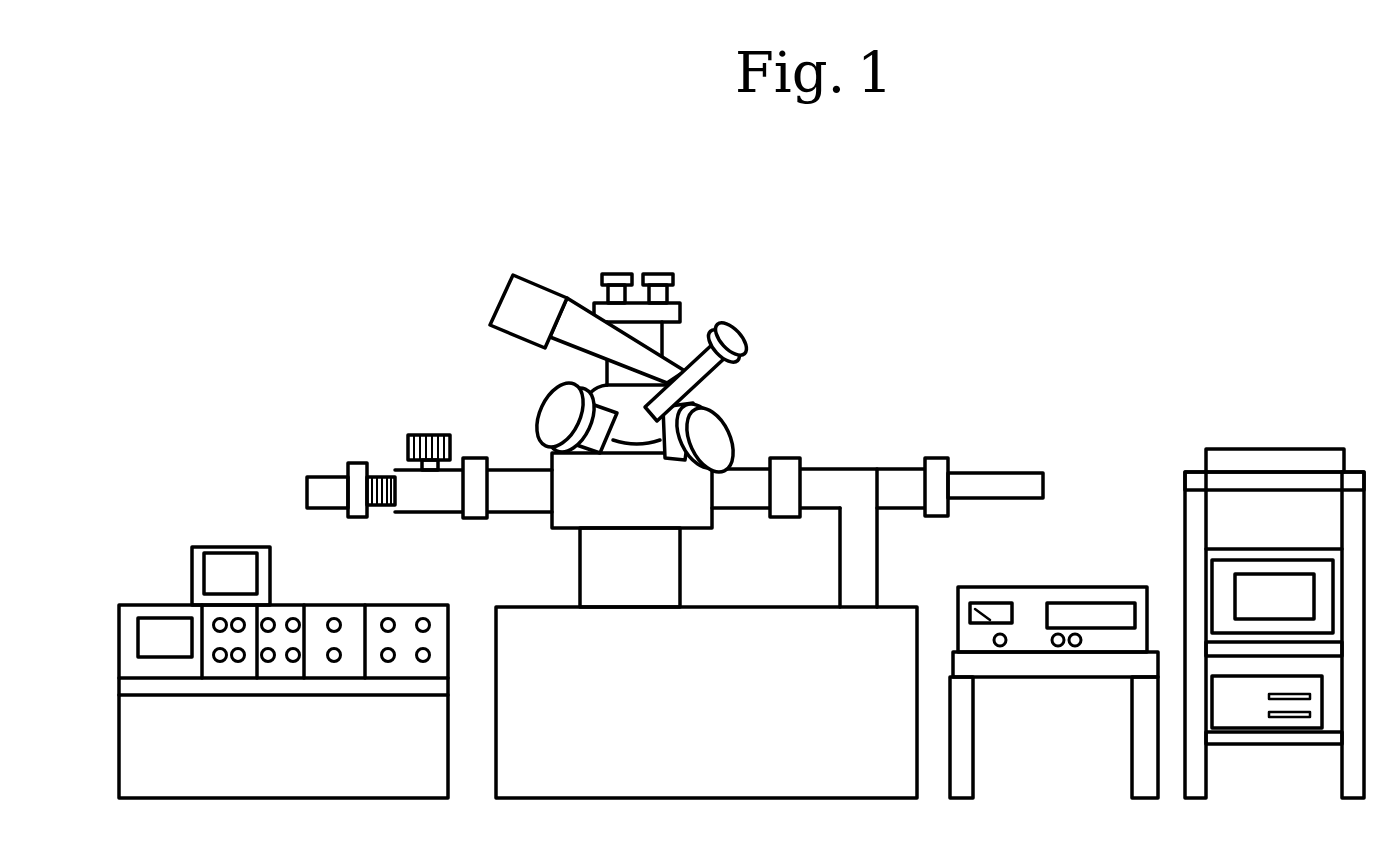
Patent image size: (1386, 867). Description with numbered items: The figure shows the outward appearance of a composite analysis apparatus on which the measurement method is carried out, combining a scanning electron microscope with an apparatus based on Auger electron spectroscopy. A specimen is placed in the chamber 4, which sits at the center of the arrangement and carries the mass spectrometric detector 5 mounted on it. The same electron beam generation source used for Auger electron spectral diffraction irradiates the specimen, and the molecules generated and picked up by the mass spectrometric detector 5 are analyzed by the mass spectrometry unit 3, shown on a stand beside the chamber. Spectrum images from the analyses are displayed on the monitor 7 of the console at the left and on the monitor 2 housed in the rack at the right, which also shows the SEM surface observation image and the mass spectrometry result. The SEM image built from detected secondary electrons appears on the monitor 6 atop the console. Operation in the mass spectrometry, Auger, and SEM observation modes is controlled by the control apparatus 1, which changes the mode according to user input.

The control apparatus 1 is at (1267, 450).
The monitor 2 is at (1249, 597).
The mass spectrometry unit 3 is at (973, 587).
The chamber 4 is at (552, 465).
The mass spectrometric detector 5 is at (733, 338).
The monitor 6 is at (237, 556).
The monitor 7 is at (163, 627).